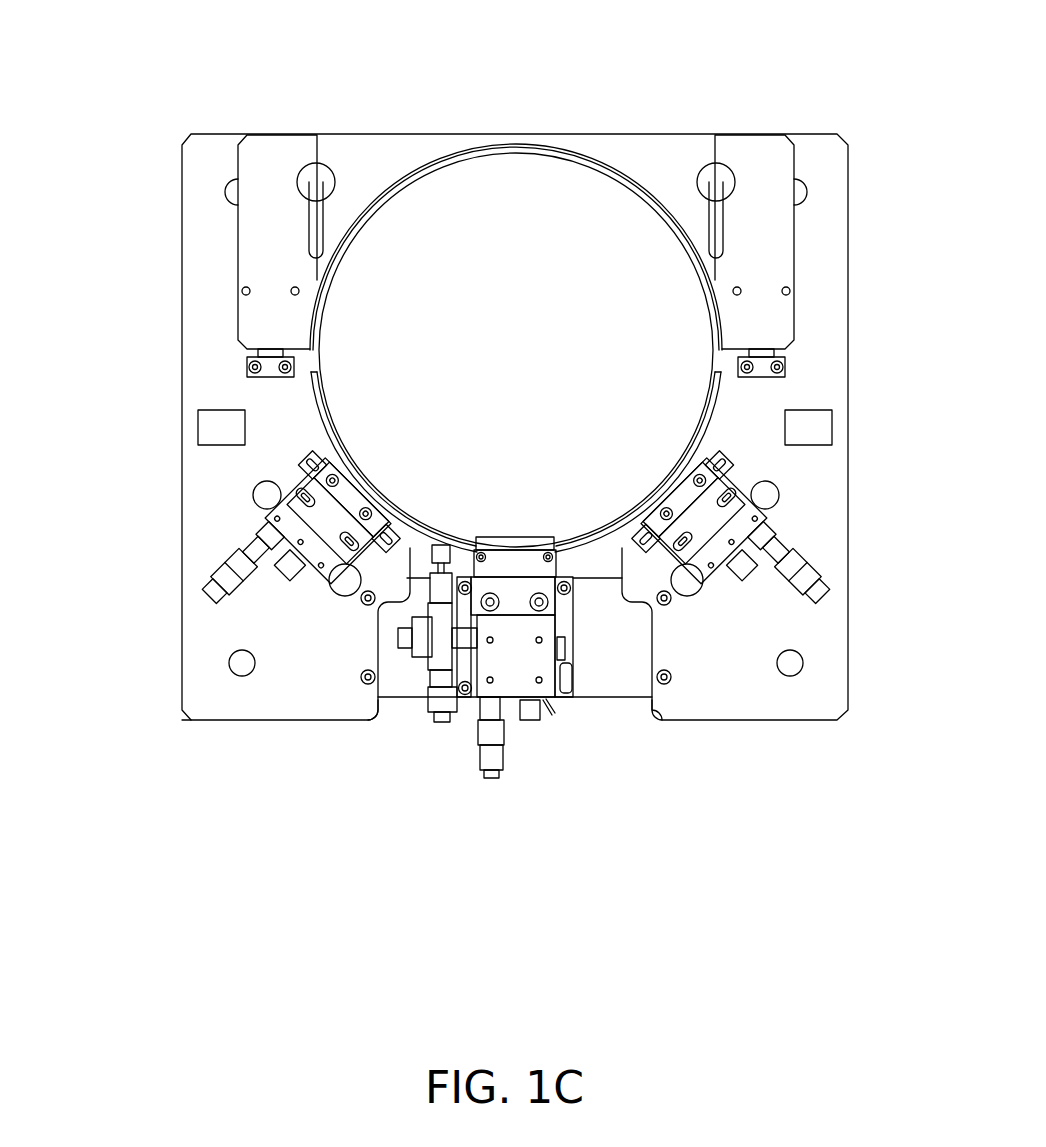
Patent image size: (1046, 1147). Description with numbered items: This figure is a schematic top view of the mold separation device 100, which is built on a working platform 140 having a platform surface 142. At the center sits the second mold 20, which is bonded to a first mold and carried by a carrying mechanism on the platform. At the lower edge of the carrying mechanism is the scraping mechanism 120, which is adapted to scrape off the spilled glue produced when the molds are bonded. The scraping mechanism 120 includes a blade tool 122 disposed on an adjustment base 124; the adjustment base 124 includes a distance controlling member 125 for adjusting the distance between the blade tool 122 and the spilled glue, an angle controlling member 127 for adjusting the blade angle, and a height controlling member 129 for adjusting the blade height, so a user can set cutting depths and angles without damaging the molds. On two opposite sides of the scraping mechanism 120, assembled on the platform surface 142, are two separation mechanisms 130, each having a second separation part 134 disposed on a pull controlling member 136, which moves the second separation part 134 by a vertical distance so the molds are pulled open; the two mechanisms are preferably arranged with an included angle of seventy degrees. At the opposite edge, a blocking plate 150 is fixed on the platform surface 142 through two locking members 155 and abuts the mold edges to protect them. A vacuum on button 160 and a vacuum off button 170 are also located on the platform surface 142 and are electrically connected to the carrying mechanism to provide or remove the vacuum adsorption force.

The second mold 20 is at (540, 195).
The mold separation device 100 is at (757, 892).
The scraping mechanism 120 is at (486, 777).
The blade tool 122 is at (510, 563).
The adjustment base 124 is at (412, 744).
The distance controlling member 125 is at (422, 638).
The angle controlling member 127 is at (442, 713).
The height controlling member 129 is at (487, 757).
The separation mechanism 130 is at (497, 459).
The second separation part 134 is at (355, 487).
The pull controlling member 136 is at (225, 577).
The working platform 140 is at (832, 645).
The platform surface 142 is at (729, 704).
The blocking plate 150 is at (752, 150).
The locking member 155 is at (718, 180).
The vacuum on button 160 is at (805, 431).
The vacuum off button 170 is at (215, 430).